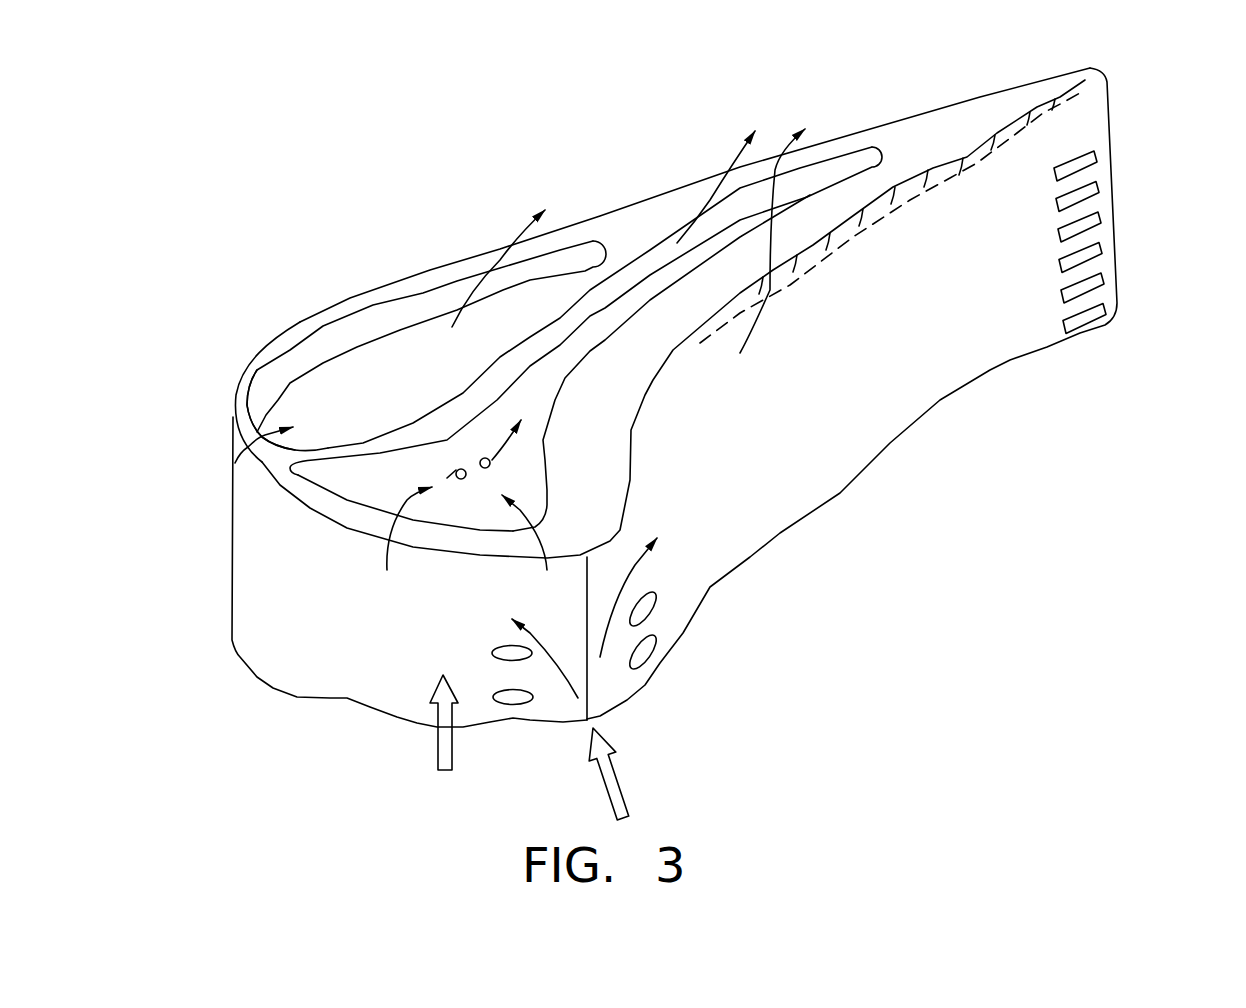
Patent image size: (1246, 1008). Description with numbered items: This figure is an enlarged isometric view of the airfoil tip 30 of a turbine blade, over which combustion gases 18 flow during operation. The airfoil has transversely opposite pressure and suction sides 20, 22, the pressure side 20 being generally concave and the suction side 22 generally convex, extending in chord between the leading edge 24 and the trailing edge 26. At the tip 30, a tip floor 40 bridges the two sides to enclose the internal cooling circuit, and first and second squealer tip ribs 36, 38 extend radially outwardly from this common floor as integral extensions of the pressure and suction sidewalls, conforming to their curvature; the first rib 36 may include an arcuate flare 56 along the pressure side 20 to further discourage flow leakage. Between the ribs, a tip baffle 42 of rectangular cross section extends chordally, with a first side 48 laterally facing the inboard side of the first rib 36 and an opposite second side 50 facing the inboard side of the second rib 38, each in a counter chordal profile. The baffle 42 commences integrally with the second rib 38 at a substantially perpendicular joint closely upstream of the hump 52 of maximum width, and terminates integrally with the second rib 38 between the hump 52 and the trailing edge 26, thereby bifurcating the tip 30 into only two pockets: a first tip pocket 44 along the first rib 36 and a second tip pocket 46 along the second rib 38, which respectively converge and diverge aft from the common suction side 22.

The combustion gases 18 is at (620, 778).
The pressure side 20 is at (832, 376).
The suction side 22 is at (314, 606).
The leading edge 24 is at (585, 598).
The trailing edge 26 is at (1113, 203).
The tip cap 30 is at (348, 288).
The first squealer tip rib 36 is at (650, 295).
The second squealer tip rib 38 is at (419, 273).
The tip floor 40 is at (271, 413).
The tip baffle 42 is at (497, 356).
The first tip pocket 44 is at (517, 467).
The second tip pocket 46 is at (320, 416).
The first side 48 is at (348, 480).
The second side 50 is at (440, 407).
The hump 52 is at (250, 367).
The arcuate flare 56 is at (637, 420).